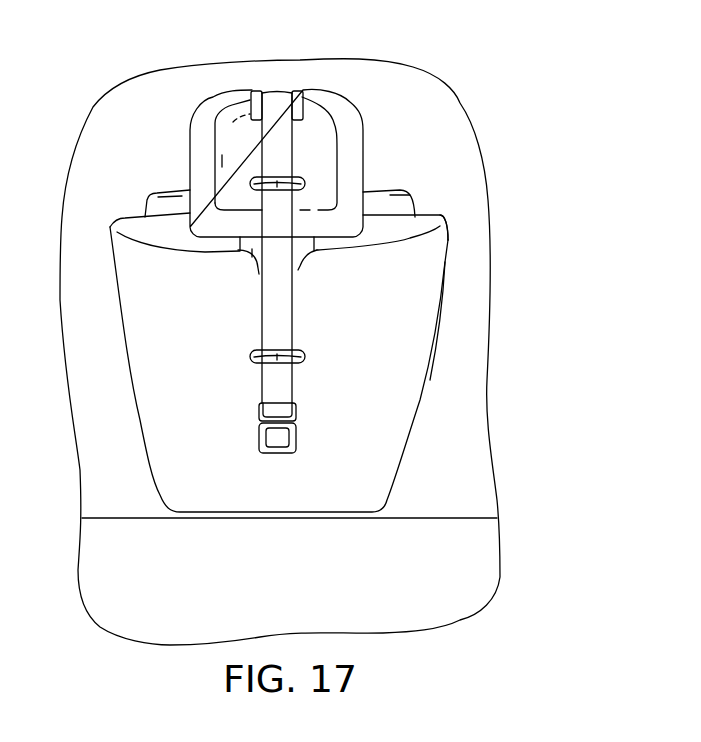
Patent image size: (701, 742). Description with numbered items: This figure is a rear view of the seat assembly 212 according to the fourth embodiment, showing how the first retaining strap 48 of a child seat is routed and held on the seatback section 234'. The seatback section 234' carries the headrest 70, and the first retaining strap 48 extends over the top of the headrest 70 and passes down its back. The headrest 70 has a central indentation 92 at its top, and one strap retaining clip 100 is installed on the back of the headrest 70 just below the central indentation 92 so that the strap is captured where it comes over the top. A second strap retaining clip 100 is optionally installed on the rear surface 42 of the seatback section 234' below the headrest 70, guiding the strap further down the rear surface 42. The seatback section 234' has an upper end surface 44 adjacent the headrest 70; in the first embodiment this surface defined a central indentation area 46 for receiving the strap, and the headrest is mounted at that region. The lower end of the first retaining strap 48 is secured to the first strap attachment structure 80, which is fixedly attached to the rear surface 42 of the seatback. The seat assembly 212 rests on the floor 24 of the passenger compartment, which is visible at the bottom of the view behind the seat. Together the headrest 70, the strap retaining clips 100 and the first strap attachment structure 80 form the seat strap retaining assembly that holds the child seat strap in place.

The floor 24 is at (138, 580).
The rear surface 42 is at (357, 380).
The upper end surface 44 is at (417, 230).
The central indentation area 46 is at (251, 262).
The first retaining strap 48 is at (277, 327).
The headrest 70 is at (247, 147).
The first strap attachment structure 80 is at (258, 442).
The central indentation 92 is at (293, 93).
The strap retaining clip 100 is at (307, 177).
The seat assembly 212 is at (450, 253).
The seatback section 234' is at (467, 321).